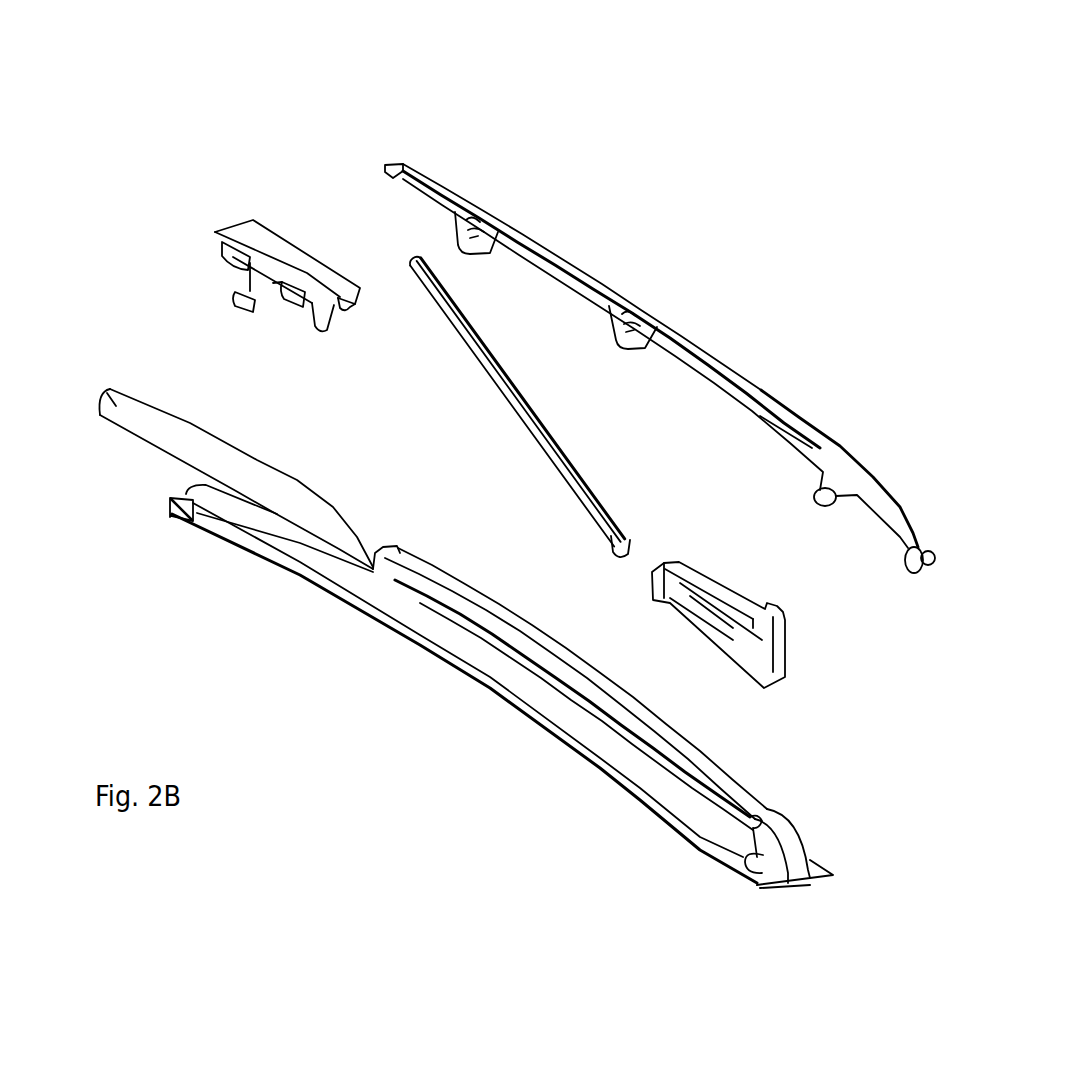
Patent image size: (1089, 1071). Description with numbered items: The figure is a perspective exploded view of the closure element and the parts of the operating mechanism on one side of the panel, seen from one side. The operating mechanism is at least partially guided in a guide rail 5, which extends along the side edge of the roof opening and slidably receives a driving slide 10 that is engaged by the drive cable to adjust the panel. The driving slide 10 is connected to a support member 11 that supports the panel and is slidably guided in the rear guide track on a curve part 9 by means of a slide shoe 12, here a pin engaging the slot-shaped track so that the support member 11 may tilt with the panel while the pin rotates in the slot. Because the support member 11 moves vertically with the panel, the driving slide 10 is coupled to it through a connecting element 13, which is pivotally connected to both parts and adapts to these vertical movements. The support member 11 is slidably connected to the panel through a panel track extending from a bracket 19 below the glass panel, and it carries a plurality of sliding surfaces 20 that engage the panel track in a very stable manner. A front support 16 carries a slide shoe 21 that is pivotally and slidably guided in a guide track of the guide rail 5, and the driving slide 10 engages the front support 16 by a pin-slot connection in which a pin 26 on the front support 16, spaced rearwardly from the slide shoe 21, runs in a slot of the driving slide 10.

The guide rail 5 is at (823, 883).
The curve part 9 is at (115, 407).
The driving slide 10 is at (773, 665).
The support member 11 is at (238, 218).
The slide shoe 12 is at (235, 297).
The connecting element 13 is at (395, 255).
The front support 16 is at (877, 497).
The bracket 19 is at (747, 388).
The sliding surfaces 20 is at (223, 252).
The slide shoe 21 is at (935, 557).
The pin 26 is at (827, 490).